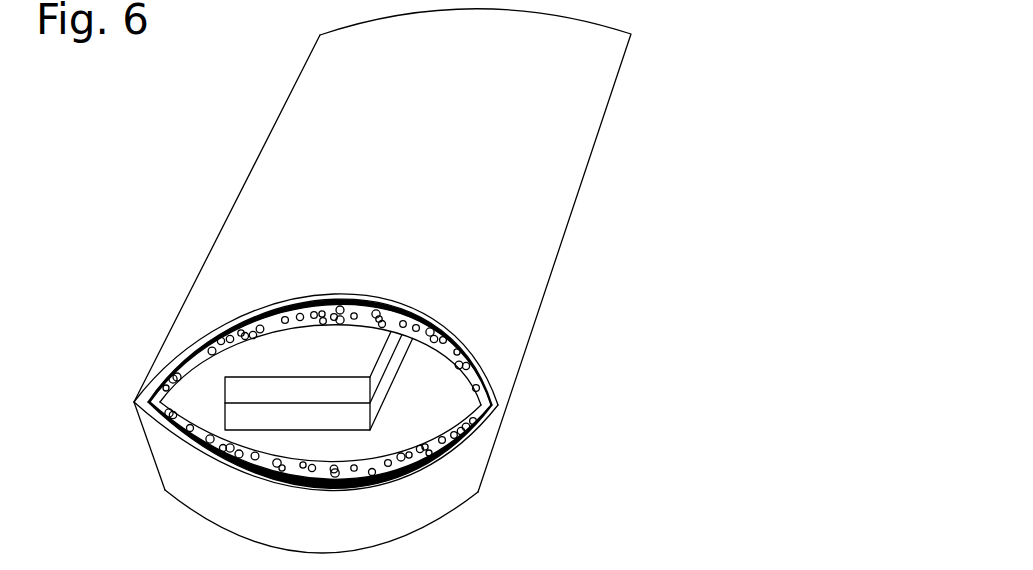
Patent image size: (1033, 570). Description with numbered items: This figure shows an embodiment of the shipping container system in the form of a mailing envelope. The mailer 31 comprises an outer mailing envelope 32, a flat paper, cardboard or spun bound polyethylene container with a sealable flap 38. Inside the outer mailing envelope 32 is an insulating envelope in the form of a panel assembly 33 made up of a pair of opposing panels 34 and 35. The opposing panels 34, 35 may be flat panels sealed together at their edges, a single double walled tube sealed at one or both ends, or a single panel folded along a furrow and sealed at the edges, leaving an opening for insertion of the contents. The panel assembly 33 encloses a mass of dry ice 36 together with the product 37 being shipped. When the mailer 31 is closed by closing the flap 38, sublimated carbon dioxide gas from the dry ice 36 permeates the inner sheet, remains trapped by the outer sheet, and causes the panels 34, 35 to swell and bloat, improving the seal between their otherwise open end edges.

The mailer 31 is at (590, 259).
The outer mailing envelope 32 is at (572, 216).
The panel assembly 33 is at (386, 488).
The panel 34 is at (472, 383).
The panel 35 is at (468, 437).
The dry ice 36 is at (393, 380).
The product 37 is at (393, 377).
The flap 38 is at (485, 473).